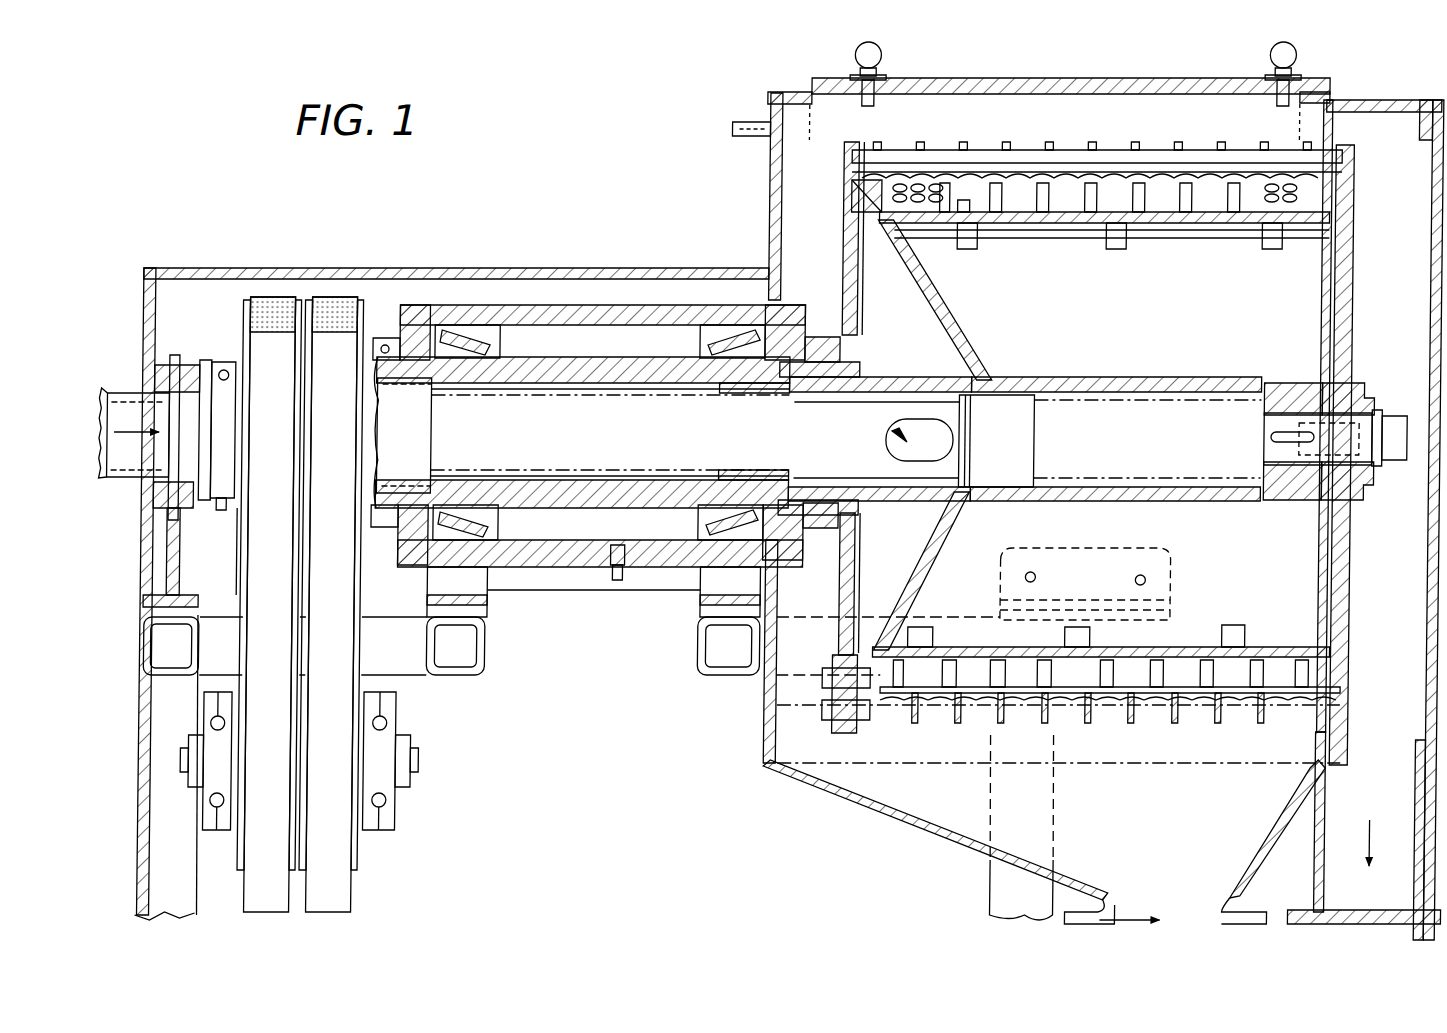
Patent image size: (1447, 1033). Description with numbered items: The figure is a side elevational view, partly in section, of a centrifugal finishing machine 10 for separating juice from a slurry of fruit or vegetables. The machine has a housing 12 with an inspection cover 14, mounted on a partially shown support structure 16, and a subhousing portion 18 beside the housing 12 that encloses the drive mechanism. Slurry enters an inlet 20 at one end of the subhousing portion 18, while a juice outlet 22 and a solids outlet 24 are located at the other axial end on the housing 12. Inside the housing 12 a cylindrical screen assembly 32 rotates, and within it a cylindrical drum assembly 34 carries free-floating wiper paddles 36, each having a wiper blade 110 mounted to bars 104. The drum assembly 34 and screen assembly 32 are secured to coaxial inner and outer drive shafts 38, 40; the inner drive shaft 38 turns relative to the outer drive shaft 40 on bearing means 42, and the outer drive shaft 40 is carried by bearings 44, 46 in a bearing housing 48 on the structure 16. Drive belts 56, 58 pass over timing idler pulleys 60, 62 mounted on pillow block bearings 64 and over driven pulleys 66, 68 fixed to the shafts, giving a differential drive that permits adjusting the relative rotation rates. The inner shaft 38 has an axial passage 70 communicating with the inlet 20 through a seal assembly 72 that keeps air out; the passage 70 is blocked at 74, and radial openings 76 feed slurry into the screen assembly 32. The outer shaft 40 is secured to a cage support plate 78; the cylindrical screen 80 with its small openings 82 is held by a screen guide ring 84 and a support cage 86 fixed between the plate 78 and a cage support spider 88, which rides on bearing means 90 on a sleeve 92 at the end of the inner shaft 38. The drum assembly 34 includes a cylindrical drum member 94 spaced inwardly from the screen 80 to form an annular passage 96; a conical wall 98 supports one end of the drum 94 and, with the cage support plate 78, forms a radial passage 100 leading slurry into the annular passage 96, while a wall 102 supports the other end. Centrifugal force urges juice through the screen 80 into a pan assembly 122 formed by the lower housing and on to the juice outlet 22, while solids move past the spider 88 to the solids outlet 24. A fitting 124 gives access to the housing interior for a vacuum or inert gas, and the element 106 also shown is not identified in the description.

The finishing machine 10 is at (623, 185).
The housing 12 is at (1392, 100).
The inspection cover 14 is at (1009, 78).
The support structure 16 is at (996, 886).
The subhousing portion 18 is at (432, 268).
The inlet 20 is at (119, 478).
The juice outlet 22 is at (1217, 900).
The solids outlet 24 is at (1340, 912).
The cylindrical screen assembly 32 is at (1356, 212).
The cylindrical drum assembly 34 is at (1299, 272).
The free-floating wiper paddles 36 is at (1106, 186).
The inner drive shaft 38 is at (633, 446).
The outer drive shaft 40 is at (518, 490).
The bearing means 42 is at (772, 398).
The bearing 44 is at (504, 343).
The bearing 46 is at (693, 340).
The bearing housing 48 is at (558, 305).
The drive belt 56 is at (264, 886).
The drive belt 58 is at (346, 893).
The timing idler pulley 60 is at (246, 660).
The timing idler pulley 62 is at (361, 656).
The pillow block bearings 64 is at (210, 700).
The driven pulley 66 is at (248, 297).
The driven pulley 68 is at (362, 297).
The axially extending passage 70 is at (722, 455).
The seal assembly 72 is at (170, 365).
The blocked end of passage 74 is at (1002, 412).
The radial openings 76 is at (886, 446).
The cage support plate 78 is at (843, 258).
The cylindrical screen 80 is at (1026, 178).
The small openings 82 is at (898, 190).
The screen guide ring 84 is at (848, 196).
The support cage 86 is at (1198, 160).
The cage support spider 88 is at (1350, 303).
The bearing means 90 is at (1359, 393).
The sleeve 92 is at (1361, 498).
The cylindrical drum member 94 is at (1009, 224).
The elongated annular passage 96 is at (841, 655).
The conical wall 98 is at (955, 326).
The radial passage 100 is at (906, 545).
The wall 102 is at (1320, 330).
The bars 104 is at (1071, 212).
The bracket 106 is at (1203, 210).
The wiper blade 110 is at (980, 185).
The pan assembly 122 is at (861, 808).
The fitting 124 is at (749, 122).